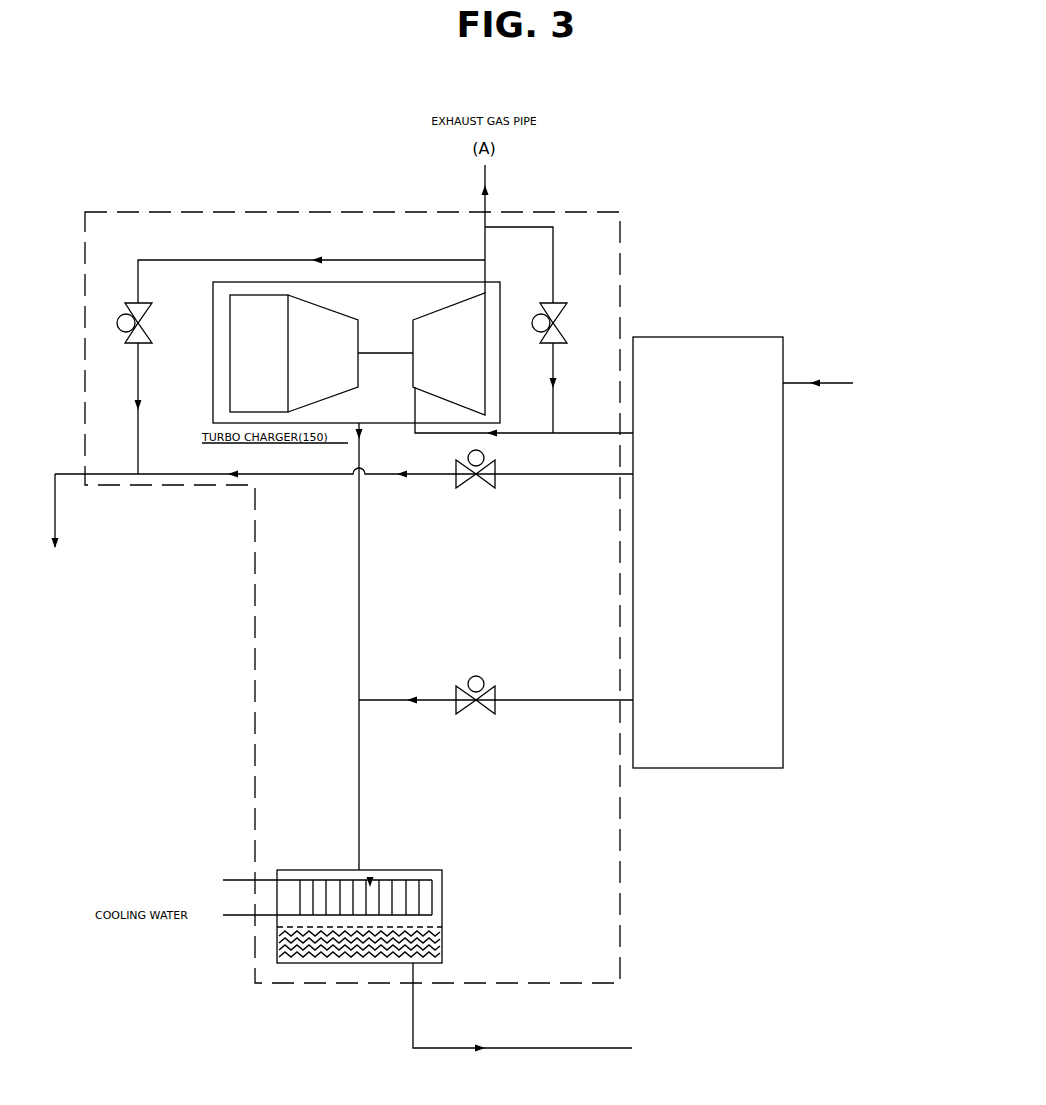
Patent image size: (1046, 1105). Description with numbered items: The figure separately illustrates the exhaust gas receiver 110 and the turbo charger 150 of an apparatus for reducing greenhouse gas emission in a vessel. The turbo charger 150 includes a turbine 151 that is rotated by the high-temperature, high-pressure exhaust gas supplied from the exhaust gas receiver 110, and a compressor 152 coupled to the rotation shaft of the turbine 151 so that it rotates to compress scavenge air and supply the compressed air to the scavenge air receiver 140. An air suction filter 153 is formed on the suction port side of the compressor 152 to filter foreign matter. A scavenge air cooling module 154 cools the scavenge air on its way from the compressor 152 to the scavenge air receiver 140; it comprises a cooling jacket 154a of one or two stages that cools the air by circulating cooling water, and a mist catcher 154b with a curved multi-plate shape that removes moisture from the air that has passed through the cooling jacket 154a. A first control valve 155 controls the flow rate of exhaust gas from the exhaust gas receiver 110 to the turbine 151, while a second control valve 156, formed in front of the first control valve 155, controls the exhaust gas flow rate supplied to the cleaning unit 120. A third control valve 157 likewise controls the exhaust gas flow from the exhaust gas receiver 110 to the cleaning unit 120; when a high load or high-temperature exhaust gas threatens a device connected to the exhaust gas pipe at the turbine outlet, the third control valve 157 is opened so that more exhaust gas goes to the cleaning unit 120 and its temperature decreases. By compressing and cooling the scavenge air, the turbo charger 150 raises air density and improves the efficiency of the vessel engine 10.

The vessel engine 10 is at (897, 393).
The exhaust gas receiver 110 is at (654, 555).
The cleaning unit 120 is at (76, 585).
The scavenge air receiver 140 is at (692, 1061).
The turbo charger 150 is at (313, 203).
The turbine 151 is at (449, 354).
The compressor 152 is at (323, 353).
The air suction filter 153 is at (259, 353).
The scavenge air cooling module 154 is at (394, 897).
The cooling jacket 154a is at (432, 898).
The mist catcher 154b is at (442, 945).
The first control valve 155 is at (573, 323).
The second control valve 156 is at (156, 323).
The third control valve 157 is at (476, 484).